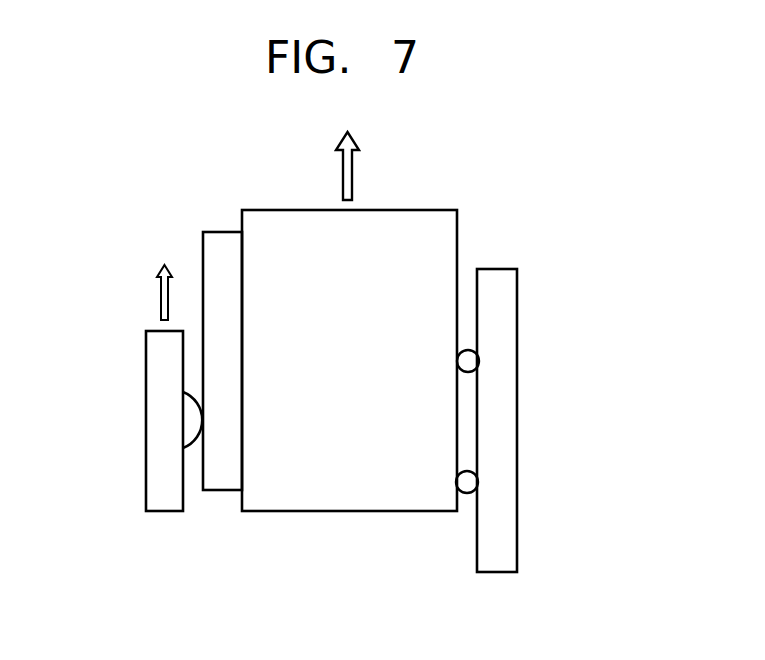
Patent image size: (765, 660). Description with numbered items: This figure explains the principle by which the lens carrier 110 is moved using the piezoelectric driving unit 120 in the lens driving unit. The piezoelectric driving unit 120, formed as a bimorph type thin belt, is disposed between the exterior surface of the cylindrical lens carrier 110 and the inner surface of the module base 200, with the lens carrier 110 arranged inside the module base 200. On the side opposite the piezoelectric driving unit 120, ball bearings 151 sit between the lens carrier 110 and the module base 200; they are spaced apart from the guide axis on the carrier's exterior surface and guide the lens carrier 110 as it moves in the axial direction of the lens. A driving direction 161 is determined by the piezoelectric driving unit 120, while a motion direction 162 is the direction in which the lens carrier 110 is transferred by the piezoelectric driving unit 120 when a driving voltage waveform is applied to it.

The lens carrier 110 is at (334, 495).
The piezoelectric driving unit 120 is at (146, 425).
The ball bearings 151 is at (468, 361).
The driving direction 161 is at (162, 295).
The motion direction 162 is at (353, 165).
The module base 200 is at (507, 418).